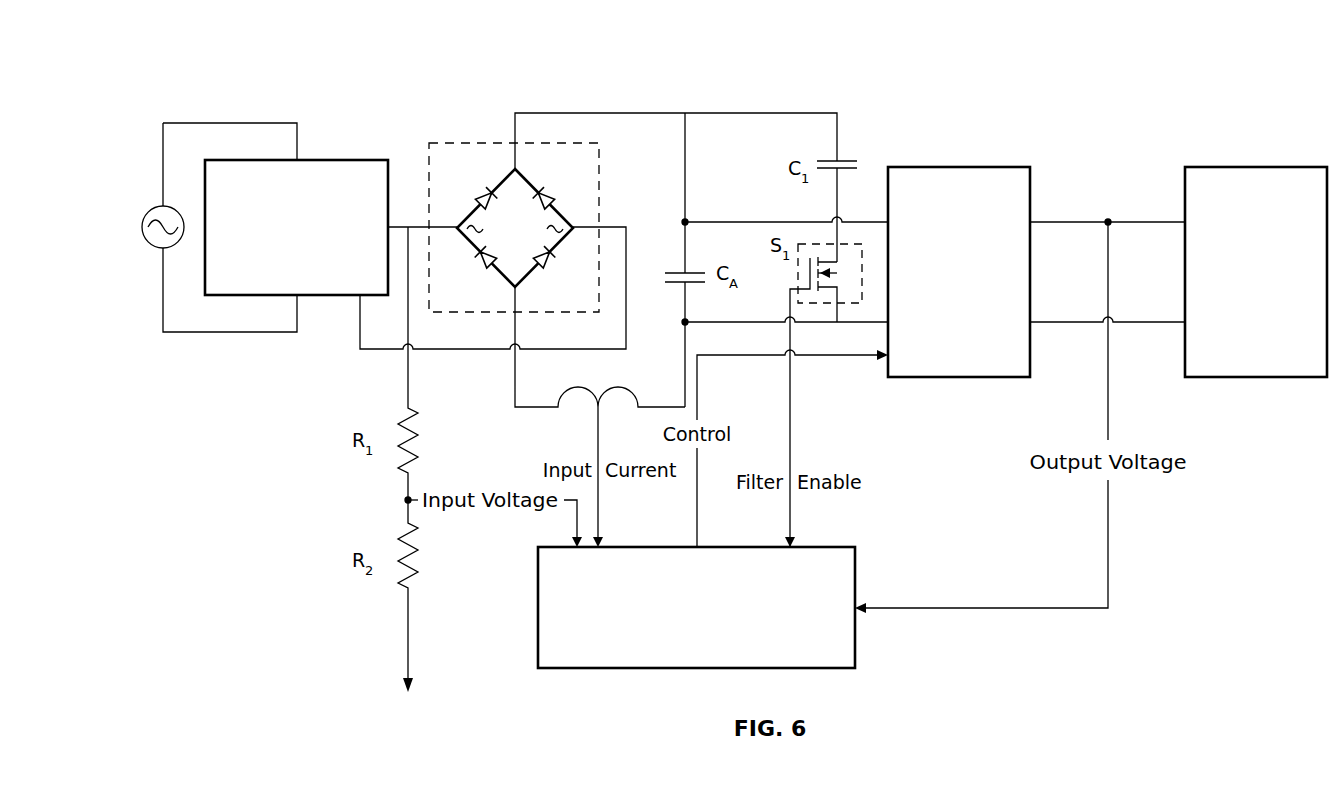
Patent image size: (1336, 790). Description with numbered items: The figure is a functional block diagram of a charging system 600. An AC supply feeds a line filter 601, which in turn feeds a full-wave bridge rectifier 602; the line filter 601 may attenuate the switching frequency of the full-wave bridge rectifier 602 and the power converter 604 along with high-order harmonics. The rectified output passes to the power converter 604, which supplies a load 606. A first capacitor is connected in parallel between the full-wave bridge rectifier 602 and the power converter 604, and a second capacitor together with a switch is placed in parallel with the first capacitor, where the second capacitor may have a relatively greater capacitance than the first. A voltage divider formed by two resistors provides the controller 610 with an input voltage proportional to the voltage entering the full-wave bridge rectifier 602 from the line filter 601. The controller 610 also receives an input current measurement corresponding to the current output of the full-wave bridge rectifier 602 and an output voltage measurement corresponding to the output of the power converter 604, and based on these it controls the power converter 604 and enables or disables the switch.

The charging system 600 is at (178, 53).
The line filter 601 is at (268, 160).
The full-wave bridge rectifier 602 is at (482, 143).
The power converter 604 is at (950, 167).
The load 606 is at (1268, 167).
The controller 610 is at (538, 610).